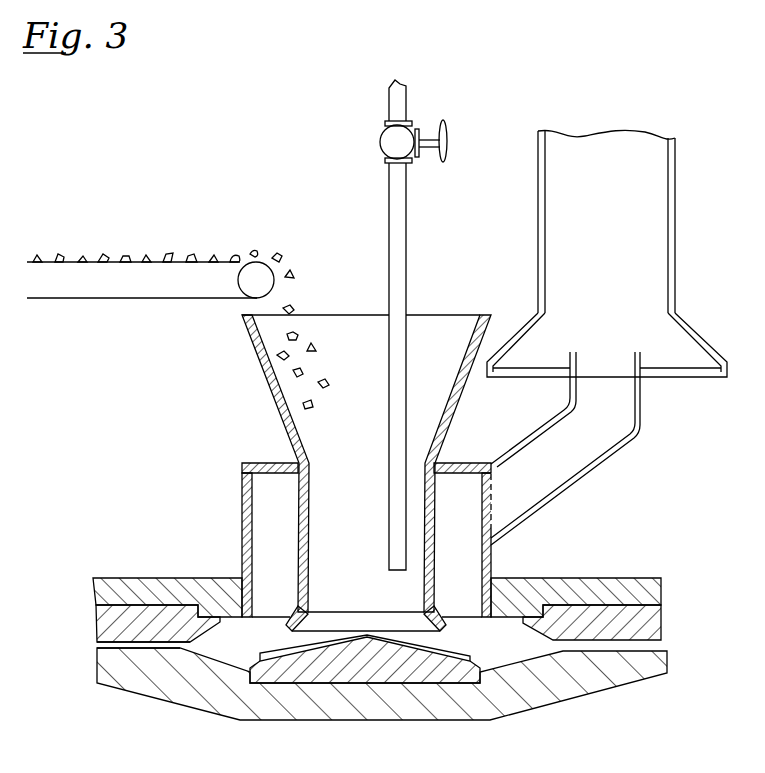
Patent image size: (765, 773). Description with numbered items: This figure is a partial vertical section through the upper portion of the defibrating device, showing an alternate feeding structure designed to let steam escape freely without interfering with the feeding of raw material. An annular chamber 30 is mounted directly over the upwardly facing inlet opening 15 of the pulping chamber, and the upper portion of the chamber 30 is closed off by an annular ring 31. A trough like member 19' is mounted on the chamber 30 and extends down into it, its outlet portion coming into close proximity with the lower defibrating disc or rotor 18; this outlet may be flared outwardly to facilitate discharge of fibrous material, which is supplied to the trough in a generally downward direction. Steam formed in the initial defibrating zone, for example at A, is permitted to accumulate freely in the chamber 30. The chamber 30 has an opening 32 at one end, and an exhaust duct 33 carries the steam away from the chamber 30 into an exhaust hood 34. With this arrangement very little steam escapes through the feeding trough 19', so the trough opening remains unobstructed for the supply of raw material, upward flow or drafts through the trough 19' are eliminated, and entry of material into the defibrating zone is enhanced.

The trough like member 19' is at (346, 442).
The exhaust hood 34 is at (652, 283).
The exhaust duct 33 is at (620, 448).
The annular chamber 30 is at (243, 503).
The annular ring 31 is at (258, 463).
The opening 32 is at (486, 520).
The opening 15 is at (267, 617).
The rotor 18 is at (602, 690).
The initial defibrating zone A is at (186, 650).